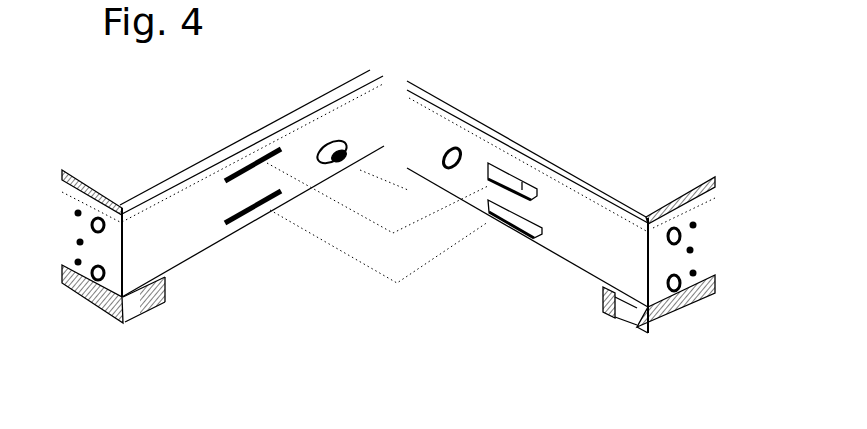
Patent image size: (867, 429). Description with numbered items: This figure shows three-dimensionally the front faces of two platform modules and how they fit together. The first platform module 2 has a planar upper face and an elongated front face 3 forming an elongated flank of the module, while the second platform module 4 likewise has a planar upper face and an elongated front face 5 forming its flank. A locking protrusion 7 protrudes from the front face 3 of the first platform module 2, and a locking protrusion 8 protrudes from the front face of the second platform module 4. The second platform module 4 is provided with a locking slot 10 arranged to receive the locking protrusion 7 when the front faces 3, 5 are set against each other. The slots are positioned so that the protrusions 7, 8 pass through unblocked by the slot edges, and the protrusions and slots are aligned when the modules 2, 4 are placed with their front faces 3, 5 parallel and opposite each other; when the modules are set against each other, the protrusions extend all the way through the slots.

The first platform module 2 is at (675, 310).
The front face of first platform module 3 is at (606, 252).
The second platform module 4 is at (178, 267).
The front face of second platform module 5 is at (178, 246).
The locking protrusion 7 is at (509, 168).
The locking protrusion 8 is at (323, 138).
The locking slot 10 is at (247, 168).